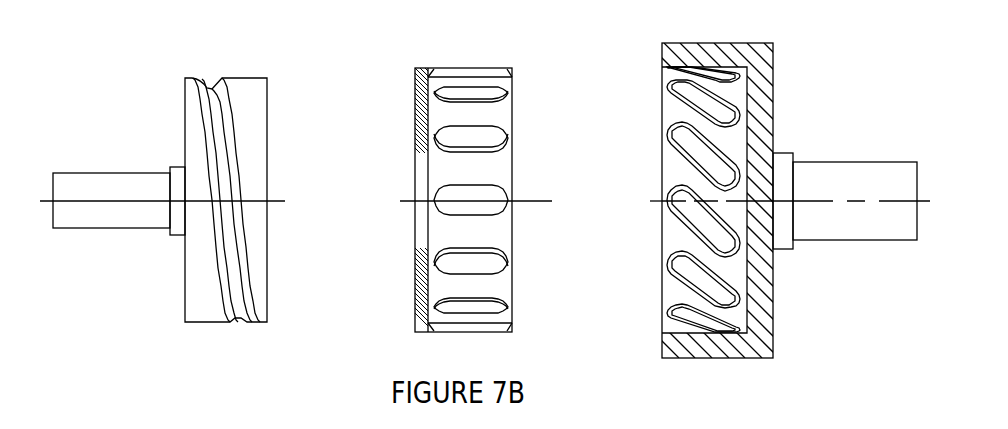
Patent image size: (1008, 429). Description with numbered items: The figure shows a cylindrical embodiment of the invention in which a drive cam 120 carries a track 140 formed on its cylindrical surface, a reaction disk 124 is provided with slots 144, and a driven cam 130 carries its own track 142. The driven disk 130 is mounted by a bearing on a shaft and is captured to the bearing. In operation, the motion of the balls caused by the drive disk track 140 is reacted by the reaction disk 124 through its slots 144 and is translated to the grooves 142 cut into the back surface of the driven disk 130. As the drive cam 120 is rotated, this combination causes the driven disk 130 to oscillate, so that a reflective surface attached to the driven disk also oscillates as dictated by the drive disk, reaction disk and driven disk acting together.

The drive cam 120 is at (247, 98).
The track 140 is at (212, 92).
The reaction disk 124 is at (424, 67).
The slots 144 is at (500, 128).
The driven cam 130 is at (723, 53).
The track 142 is at (677, 152).